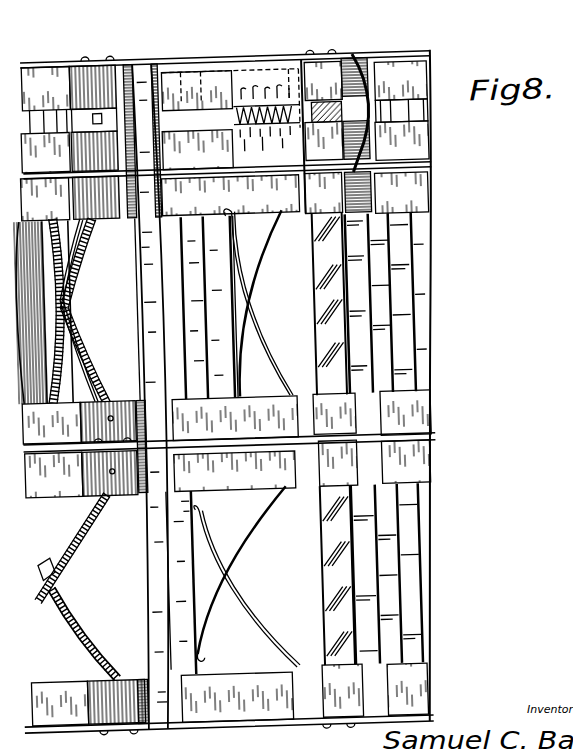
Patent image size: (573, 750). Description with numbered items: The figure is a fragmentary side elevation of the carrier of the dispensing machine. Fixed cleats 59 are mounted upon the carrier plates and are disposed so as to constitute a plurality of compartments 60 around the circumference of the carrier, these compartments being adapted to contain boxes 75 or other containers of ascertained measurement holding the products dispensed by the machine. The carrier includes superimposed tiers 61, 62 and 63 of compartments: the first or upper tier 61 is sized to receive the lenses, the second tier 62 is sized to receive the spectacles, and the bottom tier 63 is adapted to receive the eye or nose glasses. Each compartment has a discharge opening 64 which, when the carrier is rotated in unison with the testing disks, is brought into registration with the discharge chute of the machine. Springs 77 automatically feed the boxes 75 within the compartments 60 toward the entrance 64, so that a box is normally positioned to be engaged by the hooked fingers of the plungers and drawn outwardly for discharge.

The fixed cleats 59 is at (295, 218).
The compartments 60 is at (323, 281).
The upper tier of compartments 61 is at (222, 97).
The second tier of compartments 62 is at (350, 283).
The bottom tier of compartments 63 is at (310, 568).
The discharge openings 64 is at (173, 68).
The boxes 75 is at (147, 106).
The springs 77 is at (61, 118).